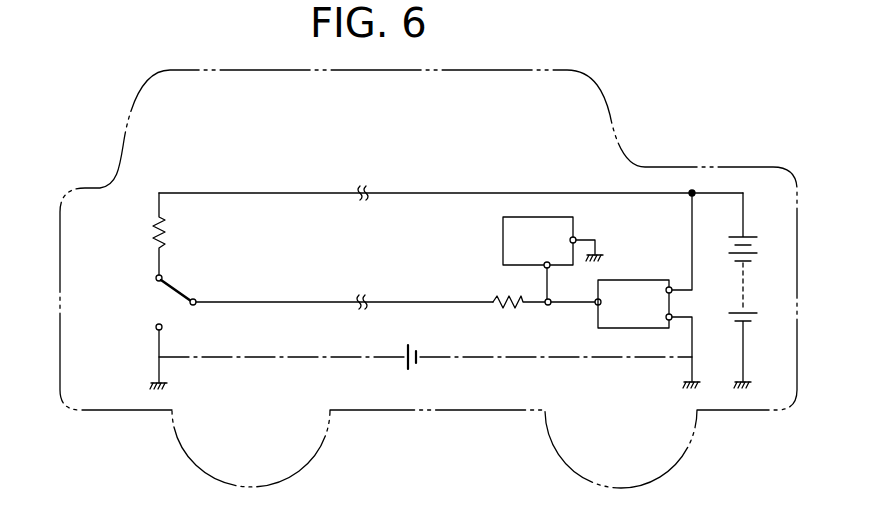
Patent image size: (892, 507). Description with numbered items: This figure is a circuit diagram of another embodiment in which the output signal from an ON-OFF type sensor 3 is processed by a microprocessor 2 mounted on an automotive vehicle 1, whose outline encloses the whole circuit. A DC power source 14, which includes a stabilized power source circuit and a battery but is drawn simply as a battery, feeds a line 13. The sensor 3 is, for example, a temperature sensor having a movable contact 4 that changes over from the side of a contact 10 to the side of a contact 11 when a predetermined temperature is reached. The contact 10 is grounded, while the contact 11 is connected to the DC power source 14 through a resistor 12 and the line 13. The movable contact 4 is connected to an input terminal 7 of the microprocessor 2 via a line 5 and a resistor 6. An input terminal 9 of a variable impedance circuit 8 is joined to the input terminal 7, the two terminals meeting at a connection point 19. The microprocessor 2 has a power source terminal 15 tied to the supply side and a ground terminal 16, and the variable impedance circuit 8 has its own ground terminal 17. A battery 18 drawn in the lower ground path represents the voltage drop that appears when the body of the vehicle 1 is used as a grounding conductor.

The automotive vehicle 1 is at (620, 81).
The microprocessor 2 is at (632, 280).
The ON-OFF type sensor 3 is at (190, 292).
The movable contact 4 is at (196, 305).
The line 5 is at (280, 302).
The resistor 6 is at (498, 306).
The input terminal 7 is at (596, 305).
The variable impedance circuit 8 is at (507, 217).
The input terminal 9 is at (544, 267).
The contact 10 is at (155, 327).
The contact 11 is at (155, 277).
The resistor 12 is at (153, 234).
The line 13 is at (260, 193).
The DC power source 14 is at (760, 240).
The power source terminal 15 is at (669, 287).
The ground terminal 16 is at (672, 317).
The ground terminal 17 is at (577, 240).
The battery 18 is at (403, 362).
The connection point 19 is at (548, 305).